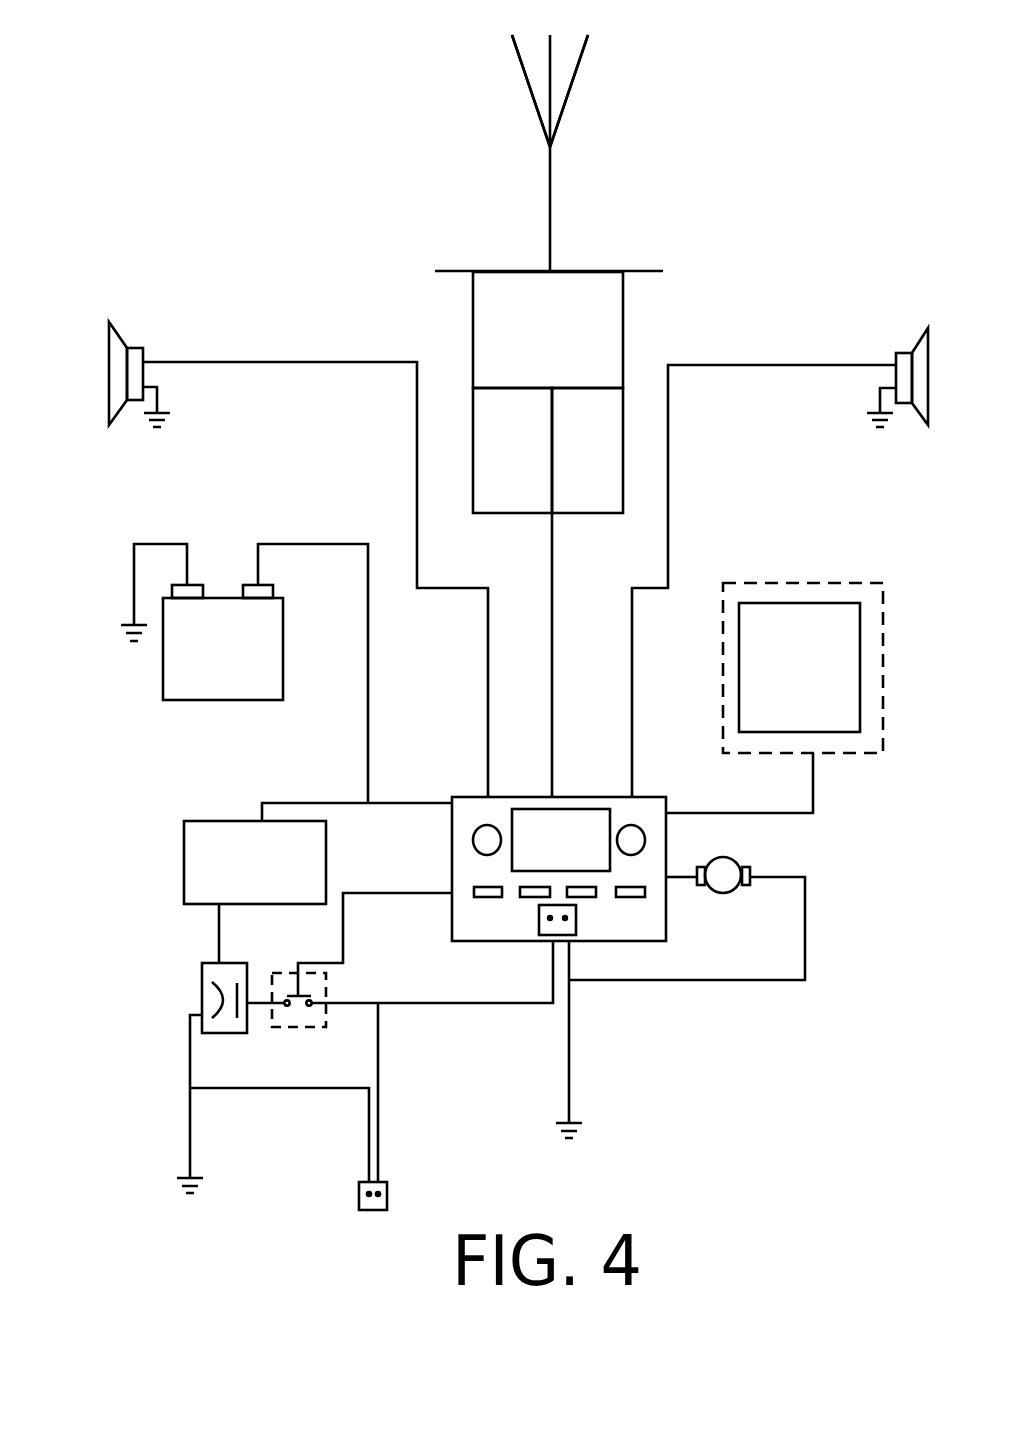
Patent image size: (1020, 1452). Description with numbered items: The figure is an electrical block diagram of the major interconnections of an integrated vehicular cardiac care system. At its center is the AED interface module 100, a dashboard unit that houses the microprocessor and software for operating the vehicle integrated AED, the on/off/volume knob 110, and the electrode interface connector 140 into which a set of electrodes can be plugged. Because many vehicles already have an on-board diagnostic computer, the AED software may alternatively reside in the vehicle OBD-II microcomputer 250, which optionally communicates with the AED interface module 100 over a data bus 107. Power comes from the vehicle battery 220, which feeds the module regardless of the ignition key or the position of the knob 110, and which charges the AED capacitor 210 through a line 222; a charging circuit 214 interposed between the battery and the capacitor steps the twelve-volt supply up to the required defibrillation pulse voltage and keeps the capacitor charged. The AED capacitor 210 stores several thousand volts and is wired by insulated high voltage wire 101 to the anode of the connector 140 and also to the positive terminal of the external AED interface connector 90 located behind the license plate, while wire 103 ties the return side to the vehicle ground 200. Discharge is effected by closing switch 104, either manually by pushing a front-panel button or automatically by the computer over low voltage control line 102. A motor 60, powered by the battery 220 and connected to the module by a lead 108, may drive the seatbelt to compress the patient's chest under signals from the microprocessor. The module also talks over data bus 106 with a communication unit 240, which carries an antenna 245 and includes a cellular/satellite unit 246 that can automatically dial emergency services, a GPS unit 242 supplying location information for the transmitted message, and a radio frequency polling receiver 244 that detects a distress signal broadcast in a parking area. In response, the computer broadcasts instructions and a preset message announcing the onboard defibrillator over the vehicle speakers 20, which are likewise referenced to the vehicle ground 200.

The communication unit 240 is at (646, 149).
The antenna 245 is at (558, 132).
The cellular/satellite unit 246 is at (528, 359).
The radio frequency polling receiver 244 is at (492, 477).
The GPS unit 242 is at (565, 477).
The speakers 20 is at (122, 337).
The vehicle ground 200 is at (160, 410).
The vehicle battery 220 is at (203, 694).
The line 222 is at (333, 543).
The data bus 106 is at (552, 672).
The vehicle OBD-II microcomputer 250 is at (780, 709).
The data bus 107 is at (813, 785).
The AED interface module 100 is at (610, 931).
The on/off/volume knob 110 is at (473, 845).
The electrode interface connector 140 is at (576, 925).
The motor 60 is at (723, 893).
The motor lead 108 is at (697, 885).
The control line 102 is at (395, 893).
The switch 104 is at (314, 1027).
The high voltage wire 101 is at (433, 1003).
The wire / button 103 is at (473, 897).
The charging circuit 214 is at (235, 904).
The AED capacitor 210 is at (202, 972).
The external AED interface connector 90 is at (387, 1193).